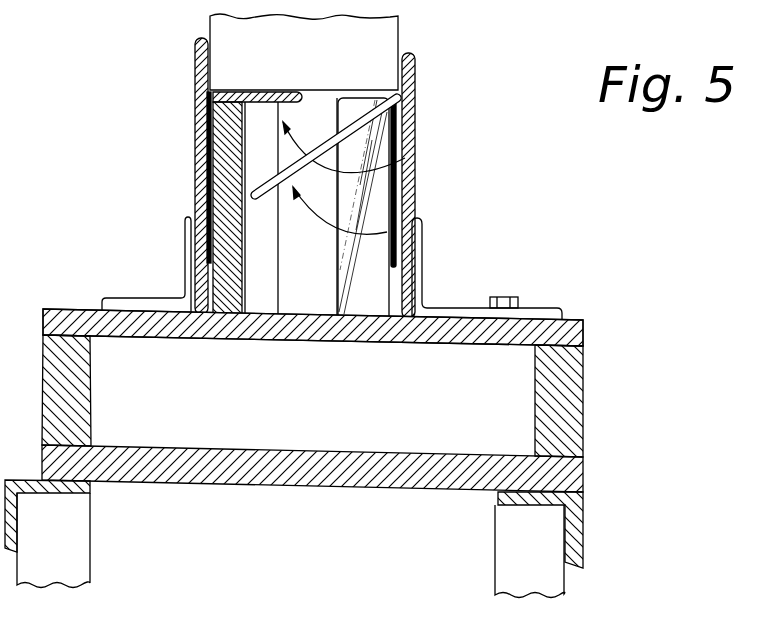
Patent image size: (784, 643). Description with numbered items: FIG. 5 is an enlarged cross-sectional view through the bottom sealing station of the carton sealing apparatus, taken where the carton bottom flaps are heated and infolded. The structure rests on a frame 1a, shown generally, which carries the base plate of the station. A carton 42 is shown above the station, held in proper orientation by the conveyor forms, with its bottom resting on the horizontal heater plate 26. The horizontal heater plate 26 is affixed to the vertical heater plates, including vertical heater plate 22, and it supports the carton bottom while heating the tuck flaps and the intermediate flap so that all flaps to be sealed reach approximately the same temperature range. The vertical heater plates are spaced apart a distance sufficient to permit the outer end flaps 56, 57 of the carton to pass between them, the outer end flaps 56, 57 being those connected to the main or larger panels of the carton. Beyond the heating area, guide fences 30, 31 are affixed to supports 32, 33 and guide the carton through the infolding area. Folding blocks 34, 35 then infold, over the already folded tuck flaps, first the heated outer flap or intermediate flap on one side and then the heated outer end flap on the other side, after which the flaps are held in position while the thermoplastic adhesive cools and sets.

The frame 1a is at (585, 403).
The vertical heater plate 22 is at (220, 278).
The horizontal heater plate 26 is at (263, 92).
The guide fence 30 is at (414, 117).
The guide fence 31 is at (196, 112).
The support 32 is at (415, 258).
The support 33 is at (186, 237).
The folding block 34 is at (372, 203).
The folding block 35 is at (268, 255).
The carton 42 is at (345, 54).
The outer end flap 56 is at (367, 167).
The outer end flap 57 is at (212, 178).